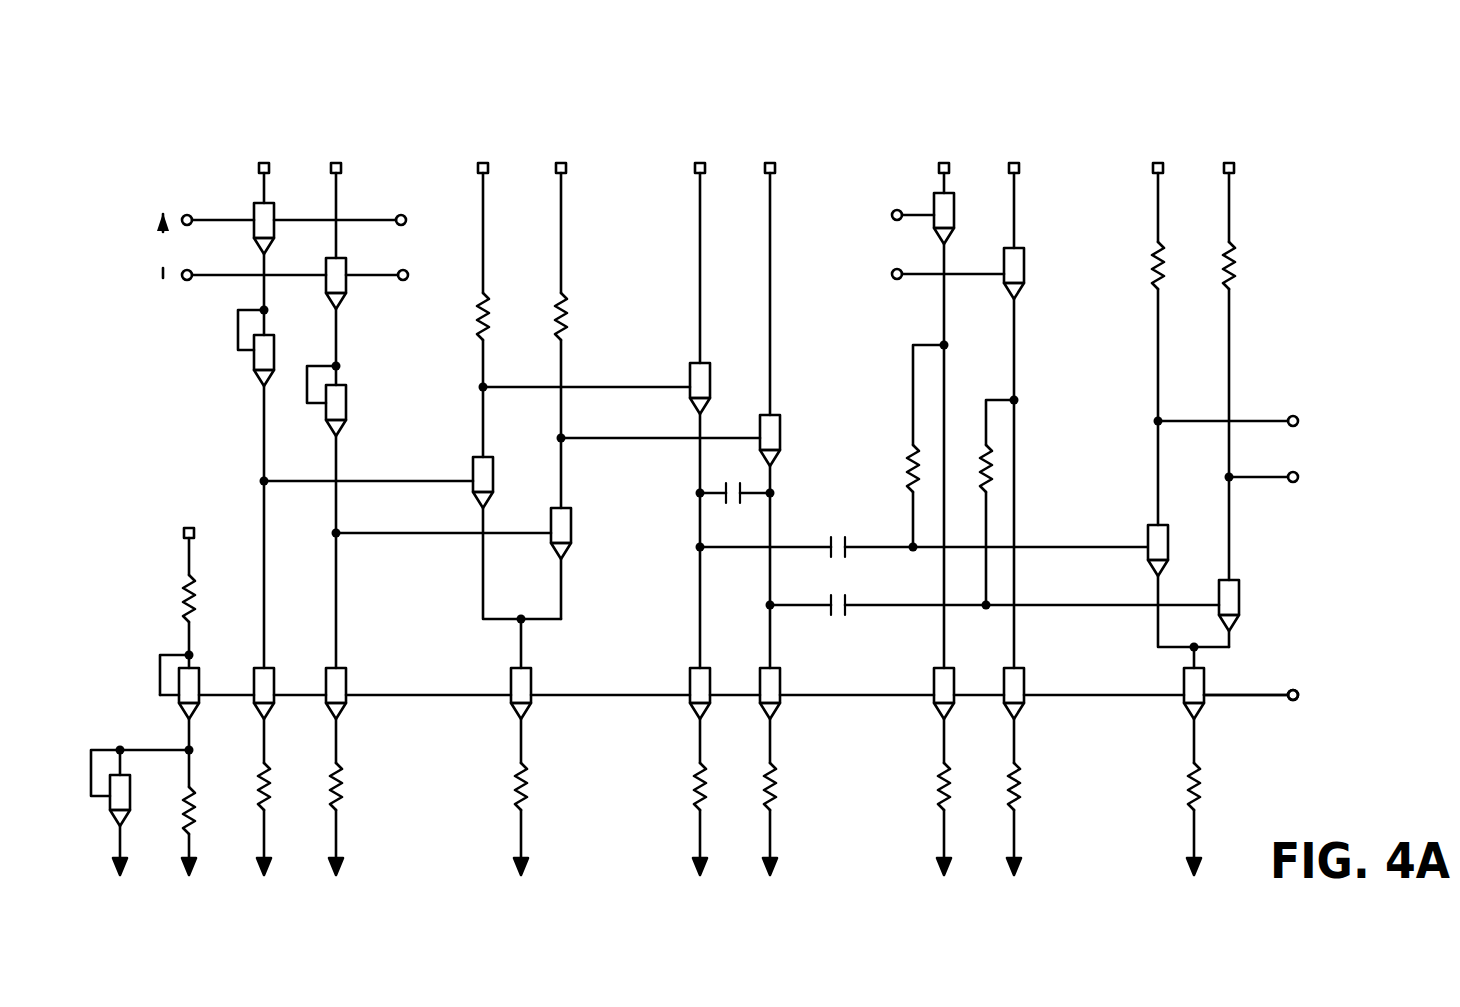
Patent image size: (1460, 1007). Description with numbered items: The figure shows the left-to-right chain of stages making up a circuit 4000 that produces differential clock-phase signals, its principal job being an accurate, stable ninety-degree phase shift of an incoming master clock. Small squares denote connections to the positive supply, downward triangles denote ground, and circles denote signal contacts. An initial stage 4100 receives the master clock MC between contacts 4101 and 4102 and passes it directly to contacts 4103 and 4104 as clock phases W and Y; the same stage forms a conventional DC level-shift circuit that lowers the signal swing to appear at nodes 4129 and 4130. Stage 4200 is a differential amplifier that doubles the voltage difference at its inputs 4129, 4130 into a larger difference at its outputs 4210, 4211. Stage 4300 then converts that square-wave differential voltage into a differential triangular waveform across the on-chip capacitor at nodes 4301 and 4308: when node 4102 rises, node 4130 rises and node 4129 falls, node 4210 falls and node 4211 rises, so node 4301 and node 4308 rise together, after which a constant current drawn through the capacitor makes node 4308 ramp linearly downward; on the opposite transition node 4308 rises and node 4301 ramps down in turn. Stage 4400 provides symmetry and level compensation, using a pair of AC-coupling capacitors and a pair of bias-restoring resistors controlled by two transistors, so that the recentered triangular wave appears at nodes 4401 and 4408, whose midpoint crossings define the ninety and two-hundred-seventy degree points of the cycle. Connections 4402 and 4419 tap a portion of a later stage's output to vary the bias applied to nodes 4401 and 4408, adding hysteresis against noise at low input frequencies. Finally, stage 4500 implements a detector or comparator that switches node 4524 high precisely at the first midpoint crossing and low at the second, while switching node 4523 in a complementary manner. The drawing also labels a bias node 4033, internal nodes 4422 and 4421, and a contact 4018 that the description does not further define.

The circuit 4000 is at (628, 106).
The initial stage 4100 is at (298, 163).
The stage 4200 is at (521, 163).
The stage 4300 is at (741, 163).
The stage 4400 is at (989, 161).
The stage 4500 is at (1193, 165).
The contact 4101 is at (192, 214).
The contact 4102 is at (189, 281).
The contact 4103 is at (405, 214).
The contact 4104 is at (403, 281).
The node 4129 is at (401, 478).
The node 4130 is at (397, 537).
The bias node 4033 is at (186, 748).
The output 4211 is at (612, 384).
The output 4210 is at (632, 441).
The node 4301 is at (697, 495).
The node 4308 is at (774, 491).
The connection 4402 is at (892, 212).
The connection 4419 is at (892, 272).
The node 4422 is at (940, 343).
The node 4421 is at (1018, 398).
The node 4401 is at (1080, 545).
The node 4408 is at (1085, 608).
The node 4523 is at (1298, 417).
The node 4524 is at (1296, 472).
The bias terminal 4018 is at (1296, 690).